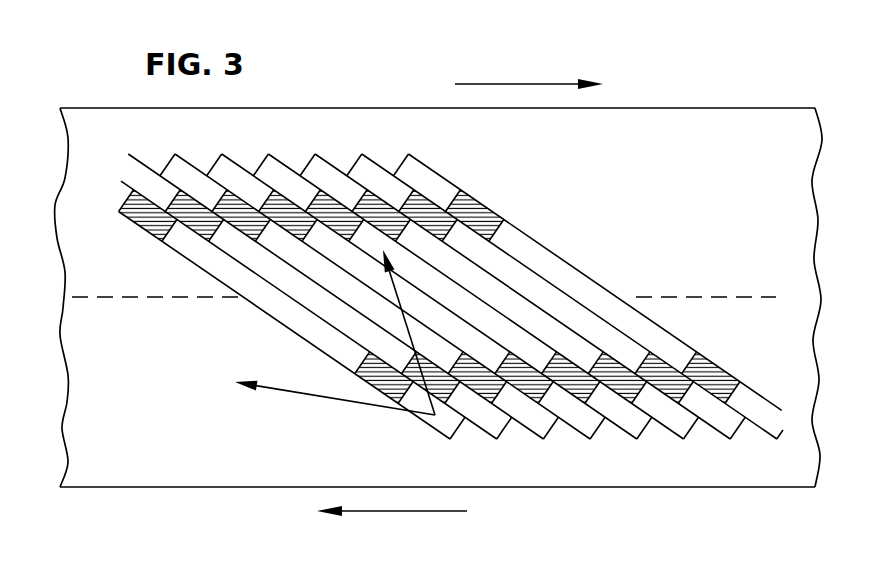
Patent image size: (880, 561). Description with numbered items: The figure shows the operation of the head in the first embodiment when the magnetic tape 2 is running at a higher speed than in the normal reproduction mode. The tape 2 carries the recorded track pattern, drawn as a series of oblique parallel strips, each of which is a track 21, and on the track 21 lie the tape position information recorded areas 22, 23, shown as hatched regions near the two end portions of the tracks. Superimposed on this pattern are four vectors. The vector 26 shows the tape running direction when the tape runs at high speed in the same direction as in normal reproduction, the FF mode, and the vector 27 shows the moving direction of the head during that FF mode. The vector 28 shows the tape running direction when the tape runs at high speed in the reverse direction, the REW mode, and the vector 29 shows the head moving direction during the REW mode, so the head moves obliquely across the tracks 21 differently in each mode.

The magnetic tape 2 is at (728, 108).
The track 21 is at (567, 264).
The tape position information recorded area 22 is at (482, 212).
The tape position information recorded area 23 is at (725, 374).
The tape running direction vector (FF mode) 26 is at (388, 511).
The head moving direction vector (FF mode) 27 is at (412, 341).
The tape running direction vector (REW mode) 28 is at (519, 84).
The head moving direction vector (REW mode) 29 is at (335, 398).